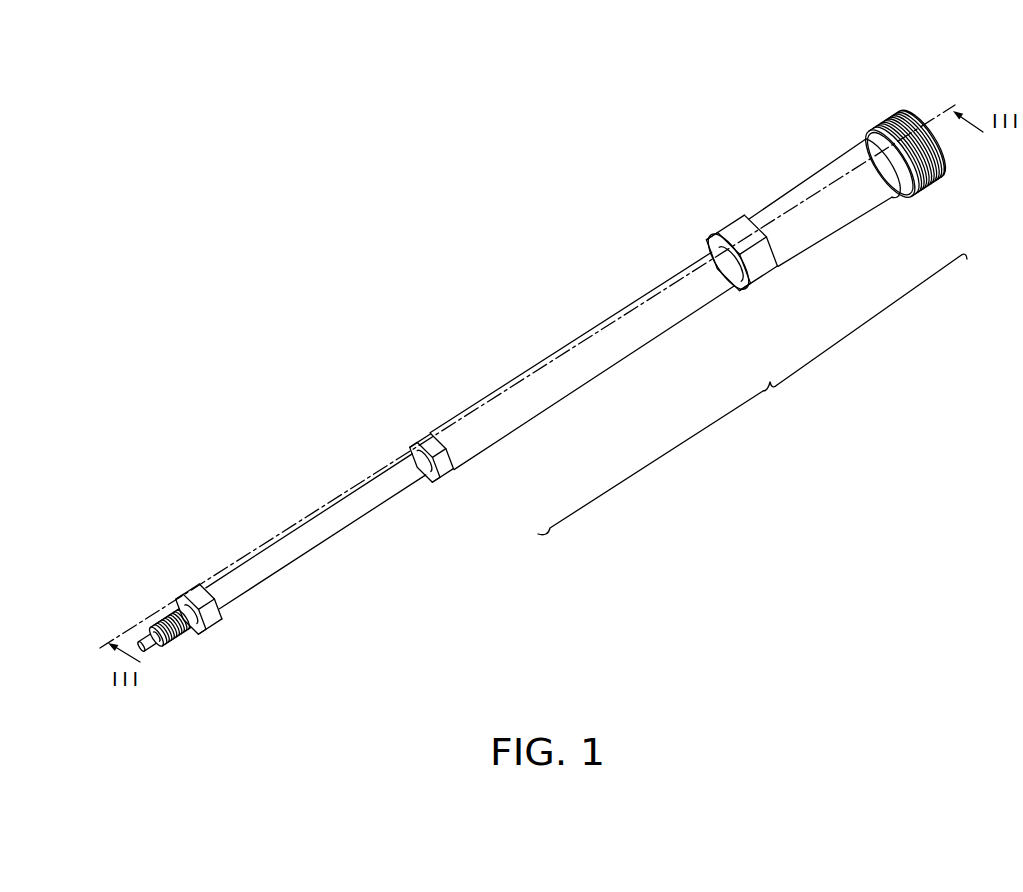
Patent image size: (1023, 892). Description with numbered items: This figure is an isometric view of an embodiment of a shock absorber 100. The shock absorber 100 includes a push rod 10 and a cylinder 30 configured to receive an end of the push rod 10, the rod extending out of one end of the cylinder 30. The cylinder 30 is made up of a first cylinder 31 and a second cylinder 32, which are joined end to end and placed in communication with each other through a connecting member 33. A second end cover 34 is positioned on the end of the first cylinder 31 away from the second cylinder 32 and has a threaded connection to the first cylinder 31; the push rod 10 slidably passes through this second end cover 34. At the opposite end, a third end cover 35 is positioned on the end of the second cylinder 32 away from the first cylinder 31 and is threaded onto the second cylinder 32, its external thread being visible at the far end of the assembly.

The shock absorber 100 is at (471, 293).
The push rod 10 is at (252, 607).
The cylinder 30 is at (752, 394).
The first cylinder 31 is at (540, 393).
The second cylinder 32 is at (838, 220).
The connecting member 33 is at (752, 247).
The second end cover 34 is at (443, 462).
The third end cover 35 is at (937, 185).